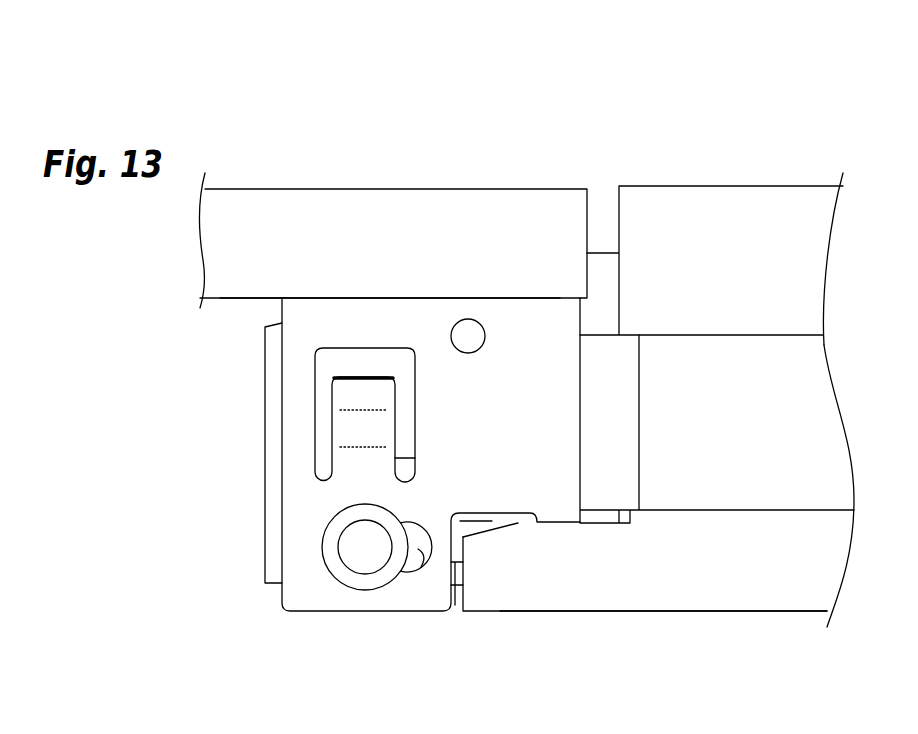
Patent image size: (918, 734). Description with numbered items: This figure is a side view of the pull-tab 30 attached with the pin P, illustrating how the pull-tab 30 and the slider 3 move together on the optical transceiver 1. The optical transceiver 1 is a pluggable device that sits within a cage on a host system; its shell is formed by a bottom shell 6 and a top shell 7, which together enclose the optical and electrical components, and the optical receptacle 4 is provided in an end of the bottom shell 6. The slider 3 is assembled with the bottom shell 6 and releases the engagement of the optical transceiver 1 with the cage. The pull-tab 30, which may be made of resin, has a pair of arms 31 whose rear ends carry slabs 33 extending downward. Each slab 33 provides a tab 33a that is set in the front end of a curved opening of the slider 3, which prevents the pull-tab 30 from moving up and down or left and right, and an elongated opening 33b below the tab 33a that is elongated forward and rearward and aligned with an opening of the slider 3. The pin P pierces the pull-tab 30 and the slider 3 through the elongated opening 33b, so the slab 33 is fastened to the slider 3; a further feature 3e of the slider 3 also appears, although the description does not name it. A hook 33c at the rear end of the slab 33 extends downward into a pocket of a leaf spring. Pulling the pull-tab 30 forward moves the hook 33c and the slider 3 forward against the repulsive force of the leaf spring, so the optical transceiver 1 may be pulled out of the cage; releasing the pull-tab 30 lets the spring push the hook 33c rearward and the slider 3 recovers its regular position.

The optical transceiver 1 is at (646, 137).
The slider 3 is at (693, 475).
The engaging portion 3e is at (380, 378).
The optical receptacle 4 is at (263, 545).
The bottom shell 6 is at (755, 618).
The top shell 7 is at (743, 208).
The pull-tab 30 is at (298, 183).
The arms 31 is at (249, 284).
The slabs 33 is at (285, 614).
The tabs 33a is at (348, 390).
The elongated openings 33b is at (413, 572).
The hooks 33c is at (558, 523).
The pins P is at (365, 550).